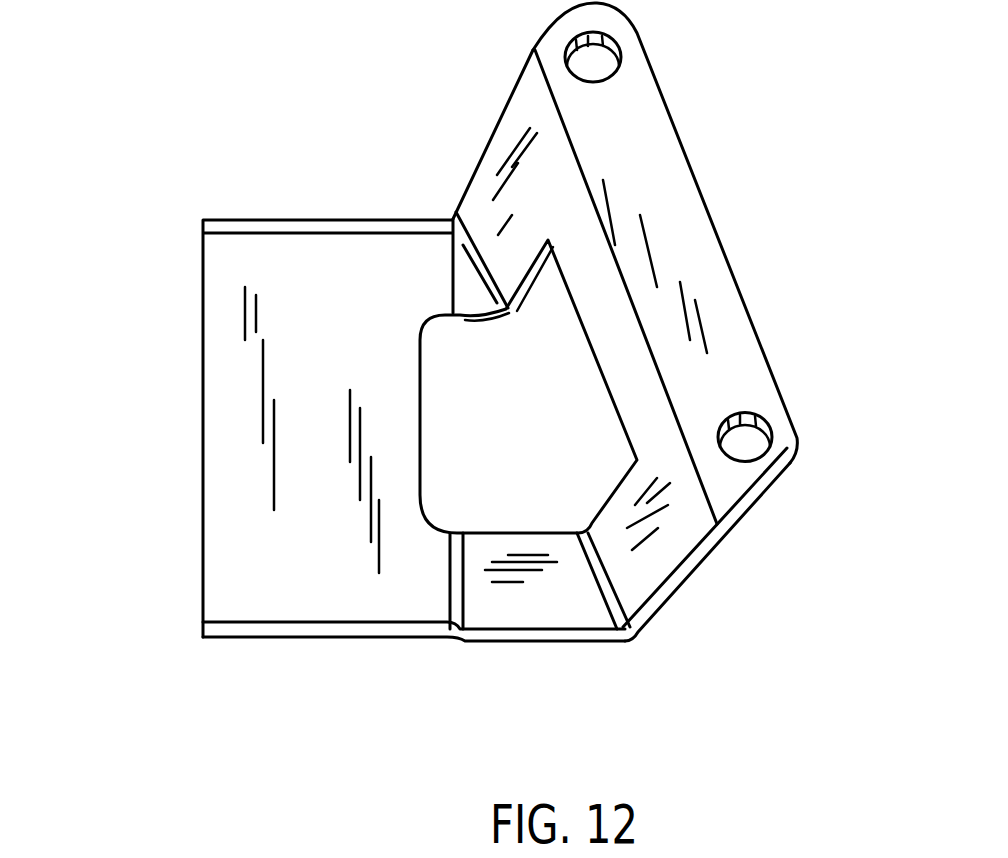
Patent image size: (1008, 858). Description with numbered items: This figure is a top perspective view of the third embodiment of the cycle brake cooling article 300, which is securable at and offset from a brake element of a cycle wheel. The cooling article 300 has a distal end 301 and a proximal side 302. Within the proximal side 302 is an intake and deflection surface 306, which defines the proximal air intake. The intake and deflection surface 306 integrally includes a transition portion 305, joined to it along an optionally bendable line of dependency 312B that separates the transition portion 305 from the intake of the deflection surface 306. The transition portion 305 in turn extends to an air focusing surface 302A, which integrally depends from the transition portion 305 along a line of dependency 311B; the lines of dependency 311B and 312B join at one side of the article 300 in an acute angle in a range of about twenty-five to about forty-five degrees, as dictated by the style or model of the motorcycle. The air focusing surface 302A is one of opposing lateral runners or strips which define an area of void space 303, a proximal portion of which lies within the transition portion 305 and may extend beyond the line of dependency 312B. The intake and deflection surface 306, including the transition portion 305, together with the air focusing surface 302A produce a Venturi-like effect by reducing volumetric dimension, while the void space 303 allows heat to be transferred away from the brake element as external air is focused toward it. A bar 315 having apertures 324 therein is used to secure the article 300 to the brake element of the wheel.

The cooling article 300 is at (402, 728).
The distal end 301 is at (812, 128).
The proximal side 302 is at (125, 357).
The air focusing surface 302A is at (683, 548).
The void space 303 is at (527, 401).
The transition portion 305 is at (577, 608).
The intake and deflection surface 306 is at (227, 430).
The line of dependency 311B is at (452, 253).
The line of dependency 312B is at (475, 222).
The bar 315 is at (712, 263).
The apertures 324 is at (612, 38).